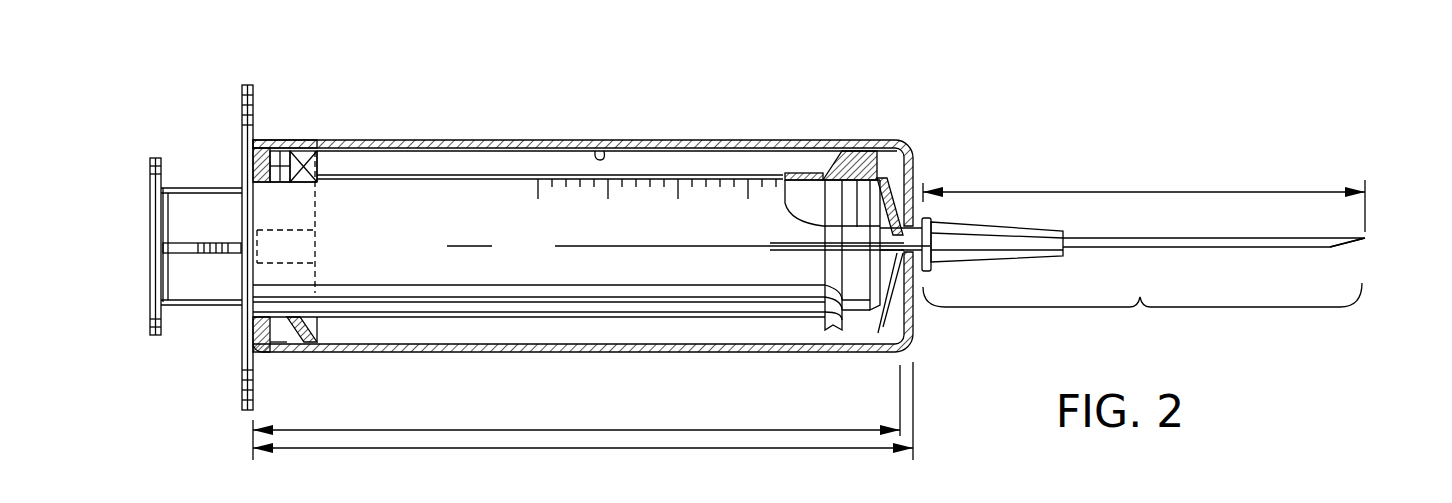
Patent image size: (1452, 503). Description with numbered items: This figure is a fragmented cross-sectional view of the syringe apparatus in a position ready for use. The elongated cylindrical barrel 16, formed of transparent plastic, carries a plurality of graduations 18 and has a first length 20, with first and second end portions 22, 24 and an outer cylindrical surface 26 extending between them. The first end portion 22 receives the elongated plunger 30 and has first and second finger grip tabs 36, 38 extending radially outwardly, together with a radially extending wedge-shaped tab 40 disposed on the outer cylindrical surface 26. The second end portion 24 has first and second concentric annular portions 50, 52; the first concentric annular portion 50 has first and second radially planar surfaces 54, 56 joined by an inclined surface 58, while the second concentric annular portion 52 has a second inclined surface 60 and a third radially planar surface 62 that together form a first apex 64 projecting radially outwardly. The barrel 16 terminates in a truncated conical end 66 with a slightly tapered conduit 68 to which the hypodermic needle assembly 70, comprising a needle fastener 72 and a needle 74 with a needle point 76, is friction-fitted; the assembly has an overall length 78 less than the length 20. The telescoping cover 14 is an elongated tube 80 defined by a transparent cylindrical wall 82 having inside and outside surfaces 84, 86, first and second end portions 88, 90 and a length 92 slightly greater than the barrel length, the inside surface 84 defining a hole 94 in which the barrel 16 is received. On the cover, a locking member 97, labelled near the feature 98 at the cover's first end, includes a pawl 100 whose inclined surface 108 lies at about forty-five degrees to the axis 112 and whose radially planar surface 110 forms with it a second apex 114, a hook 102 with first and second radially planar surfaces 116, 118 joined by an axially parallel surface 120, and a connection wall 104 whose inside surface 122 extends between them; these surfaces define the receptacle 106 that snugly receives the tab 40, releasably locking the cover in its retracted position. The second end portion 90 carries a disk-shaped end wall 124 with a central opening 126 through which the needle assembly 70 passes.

The telescoping cover 14 is at (718, 140).
The barrel 16 is at (510, 173).
The graduations 18 is at (645, 182).
The first length 20 is at (610, 428).
The first end portion 22 is at (318, 68).
The second end portion 24 is at (810, 326).
The outer cylindrical surface 26 is at (607, 220).
The plunger 30 is at (150, 330).
The first finger grip tab 36 is at (242, 100).
The second finger grip tab 38 is at (242, 390).
The wedge-shaped tab 40 is at (280, 185).
The first concentric annular portion 50 is at (830, 150).
The second concentric annular portion 52 is at (862, 157).
The first radially planar surface 54 is at (815, 172).
The second radially planar surface 56 is at (842, 160).
The inclined surface 58 is at (828, 140).
The second inclined surface 60 is at (907, 167).
The third radially planar surface 62 is at (902, 153).
The first apex 64 is at (872, 157).
The truncated conical end 66 is at (915, 187).
The slightly tapered conduit 68 is at (923, 265).
The hypodermic needle assembly 70 is at (1142, 315).
The needle fastener 72 is at (1017, 263).
The needle 74 is at (1198, 250).
The needle point 76 is at (1366, 239).
The overall length 78 is at (1157, 190).
The elongated tube 80 is at (521, 140).
The cylindrical wall 82 is at (483, 140).
The inside surface 84 is at (598, 151).
The outside surface 86 is at (557, 140).
The first end portion 88 is at (372, 360).
The second end portion 90 is at (888, 360).
The length 92 is at (560, 448).
The hole 94 is at (455, 161).
The locking member 97 is at (338, 120).
The piston seal 98 is at (350, 135).
The pawl 100 is at (320, 161).
The hook 102 is at (250, 140).
The connection wall 104 is at (283, 152).
The receptacle 106 is at (247, 258).
The inclined surface 108 is at (318, 183).
The radially planar surface 110 is at (293, 188).
The axis 112 is at (445, 246).
The second apex 114 is at (305, 188).
The first radially planar surface 116 is at (278, 140).
The second radially planar surface 118 is at (250, 164).
The axially parallel surface 120 is at (245, 240).
The inside surface 122 is at (302, 150).
The end wall 124 is at (905, 344).
The central opening 126 is at (910, 312).